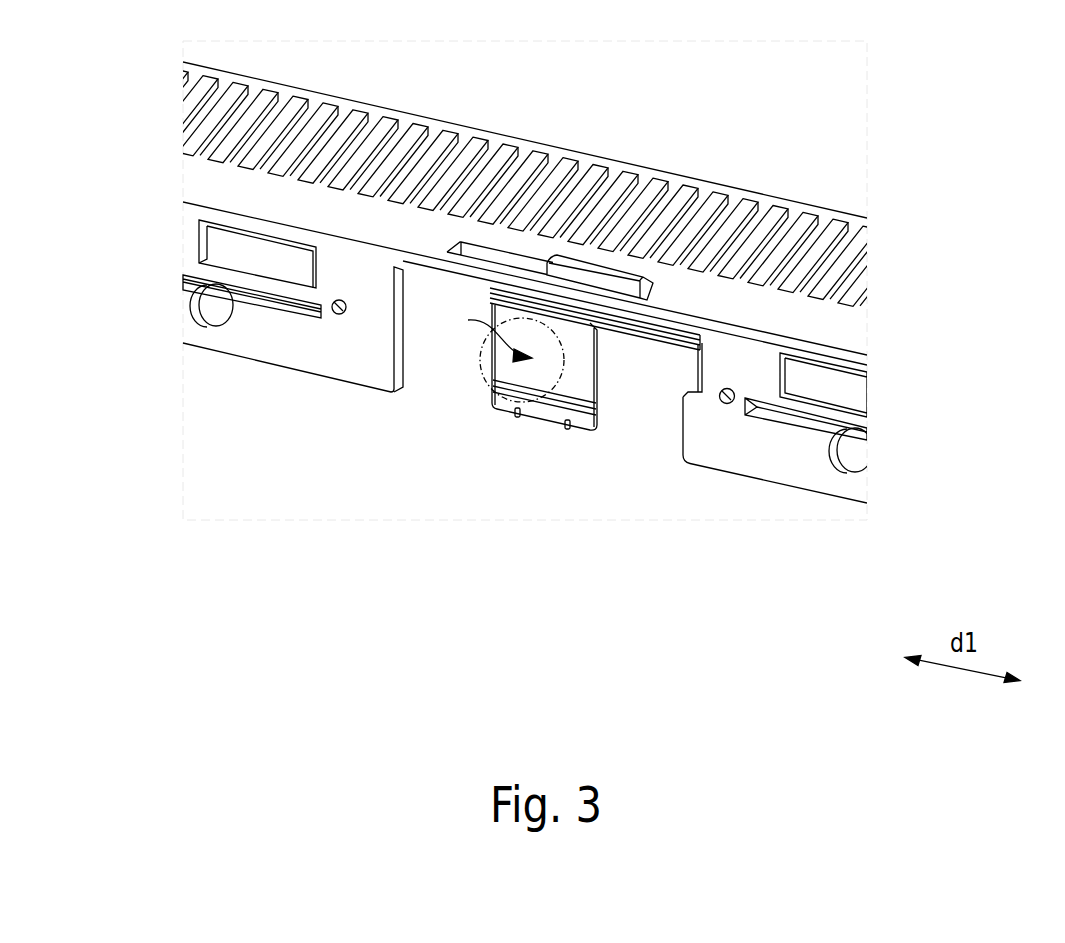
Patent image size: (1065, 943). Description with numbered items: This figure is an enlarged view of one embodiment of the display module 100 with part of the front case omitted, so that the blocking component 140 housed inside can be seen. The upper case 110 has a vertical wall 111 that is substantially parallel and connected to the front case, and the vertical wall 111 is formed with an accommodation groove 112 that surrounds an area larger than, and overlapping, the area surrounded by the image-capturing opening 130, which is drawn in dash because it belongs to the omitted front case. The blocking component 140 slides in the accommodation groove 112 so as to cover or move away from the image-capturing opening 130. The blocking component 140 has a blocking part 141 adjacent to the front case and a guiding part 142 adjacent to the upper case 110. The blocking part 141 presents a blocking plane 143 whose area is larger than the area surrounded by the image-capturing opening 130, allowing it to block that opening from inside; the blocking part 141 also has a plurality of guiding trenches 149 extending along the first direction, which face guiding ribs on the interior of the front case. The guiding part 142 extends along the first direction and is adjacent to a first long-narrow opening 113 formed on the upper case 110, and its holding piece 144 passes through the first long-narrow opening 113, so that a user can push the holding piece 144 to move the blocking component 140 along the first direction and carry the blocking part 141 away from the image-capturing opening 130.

The display module 100 is at (112, 608).
The upper case 110 is at (203, 178).
The vertical wall 111 is at (203, 330).
The accommodation groove 112 is at (396, 355).
The first long-narrow opening 113 is at (445, 252).
The image-capturing opening 130 is at (483, 373).
The blocking component 140 is at (723, 285).
The blocking part 141 is at (487, 351).
The guiding part 142 is at (752, 312).
The blocking plane 143 is at (471, 332).
The holding piece 144 is at (648, 284).
The guiding trenches 149 is at (560, 405).